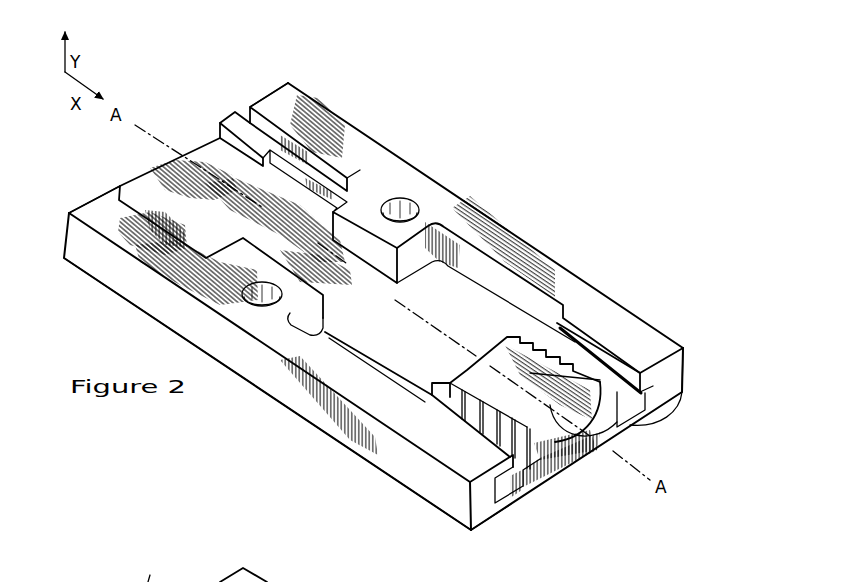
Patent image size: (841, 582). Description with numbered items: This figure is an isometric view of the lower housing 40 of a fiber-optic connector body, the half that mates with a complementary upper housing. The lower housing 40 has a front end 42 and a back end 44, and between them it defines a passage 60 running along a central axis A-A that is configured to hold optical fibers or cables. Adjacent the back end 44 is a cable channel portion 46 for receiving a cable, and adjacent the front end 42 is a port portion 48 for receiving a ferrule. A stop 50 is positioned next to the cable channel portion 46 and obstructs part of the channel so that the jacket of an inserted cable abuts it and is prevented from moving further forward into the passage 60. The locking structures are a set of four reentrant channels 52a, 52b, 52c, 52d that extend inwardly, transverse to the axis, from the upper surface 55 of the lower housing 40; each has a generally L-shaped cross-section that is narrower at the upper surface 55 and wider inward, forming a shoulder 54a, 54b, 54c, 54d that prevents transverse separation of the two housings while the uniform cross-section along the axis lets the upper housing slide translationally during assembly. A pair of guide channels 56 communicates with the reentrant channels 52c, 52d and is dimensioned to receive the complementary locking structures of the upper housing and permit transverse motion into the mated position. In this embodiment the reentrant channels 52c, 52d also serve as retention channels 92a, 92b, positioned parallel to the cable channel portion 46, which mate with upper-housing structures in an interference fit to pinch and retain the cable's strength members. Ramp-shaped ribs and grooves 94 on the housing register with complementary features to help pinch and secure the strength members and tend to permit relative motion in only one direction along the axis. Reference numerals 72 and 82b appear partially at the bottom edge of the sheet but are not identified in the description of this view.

The lower housing 40 is at (438, 191).
The front end 42 is at (220, 100).
The back end 44 is at (515, 533).
The cable channel portion 46 is at (633, 440).
The port portion 48 is at (220, 157).
The stop 50 is at (480, 356).
The reentrant channel 52a is at (115, 189).
The reentrant channel 52b is at (242, 113).
The reentrant channel 52c is at (524, 482).
The reentrant channel 52d is at (627, 399).
The shoulder 54a is at (150, 246).
The shoulder 54b is at (305, 132).
The shoulder 54c is at (500, 454).
The shoulder 54d is at (645, 375).
The upper surface 55 is at (405, 178).
The guide channels 56 is at (490, 273).
The passage 60 is at (428, 344).
The connector 72 is at (159, 569).
The guide portion 82b is at (283, 581).
The retention channel 92a is at (515, 480).
The retention channel 92b is at (638, 402).
The ribs and grooves 94 is at (568, 328).